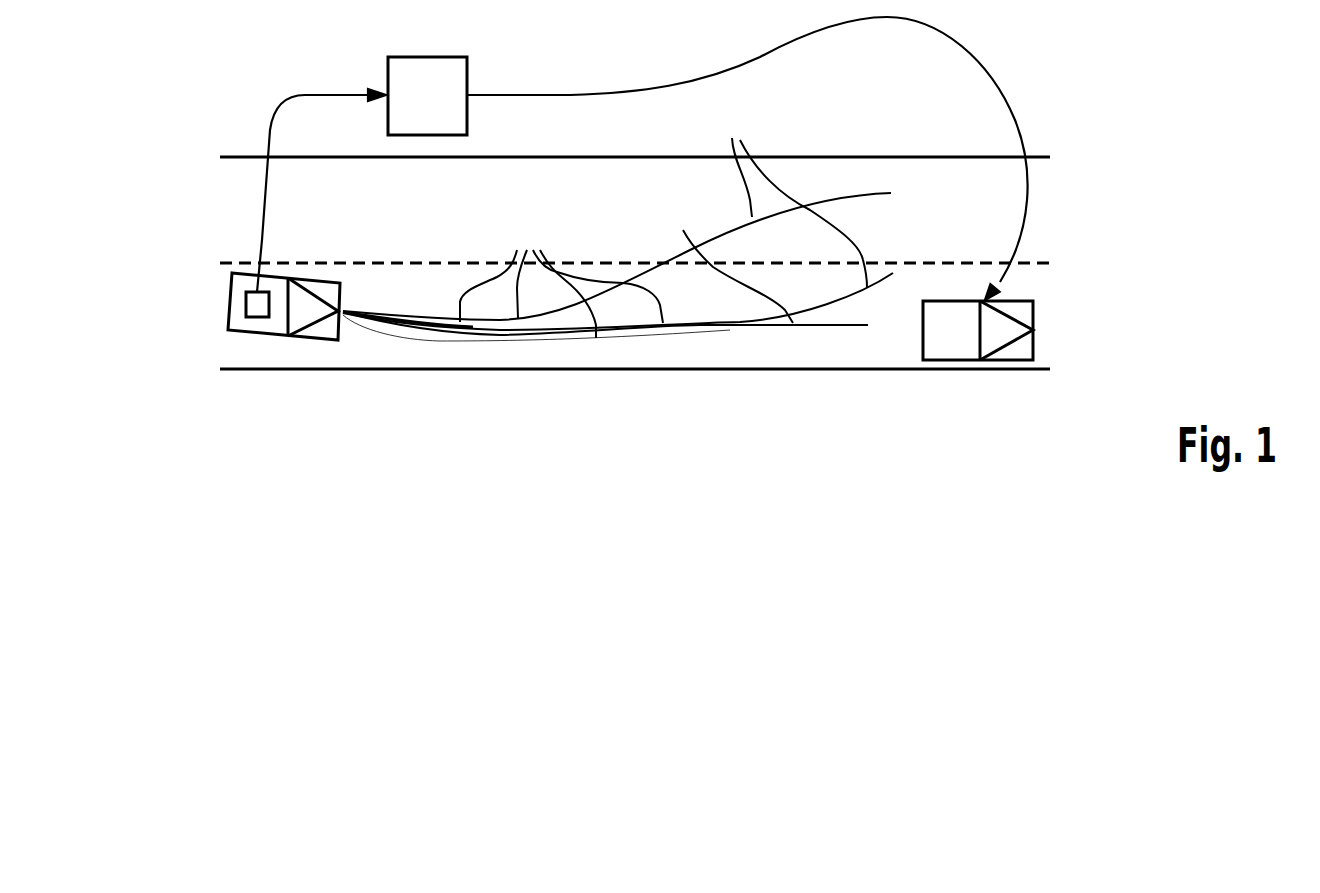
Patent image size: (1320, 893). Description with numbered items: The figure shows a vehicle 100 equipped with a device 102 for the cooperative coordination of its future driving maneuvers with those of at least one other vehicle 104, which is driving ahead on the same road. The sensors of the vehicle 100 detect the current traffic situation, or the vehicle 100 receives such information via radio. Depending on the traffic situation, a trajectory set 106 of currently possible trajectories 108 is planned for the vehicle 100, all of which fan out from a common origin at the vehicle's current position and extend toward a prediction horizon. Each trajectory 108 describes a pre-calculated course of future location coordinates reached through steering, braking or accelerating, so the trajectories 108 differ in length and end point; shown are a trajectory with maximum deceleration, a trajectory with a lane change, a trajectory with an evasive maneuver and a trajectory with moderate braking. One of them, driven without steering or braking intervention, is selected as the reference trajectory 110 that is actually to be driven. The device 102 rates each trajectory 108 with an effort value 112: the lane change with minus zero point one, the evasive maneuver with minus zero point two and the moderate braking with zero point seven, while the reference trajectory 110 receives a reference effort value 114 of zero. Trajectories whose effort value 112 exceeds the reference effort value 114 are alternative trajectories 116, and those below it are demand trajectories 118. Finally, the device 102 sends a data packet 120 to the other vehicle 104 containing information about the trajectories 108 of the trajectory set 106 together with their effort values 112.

The vehicle 100 is at (228, 319).
The device 102 is at (232, 303).
The other vehicle 104 is at (1033, 316).
The trajectory set 106 is at (618, 225).
The trajectories 108 is at (618, 265).
The reference trajectory 110 is at (702, 260).
The effort value 112 is at (839, 160).
The reference effort value 114 is at (871, 375).
The alternative trajectories 116 is at (787, 197).
The demand trajectories 118 is at (685, 331).
The data packet 120 is at (450, 114).